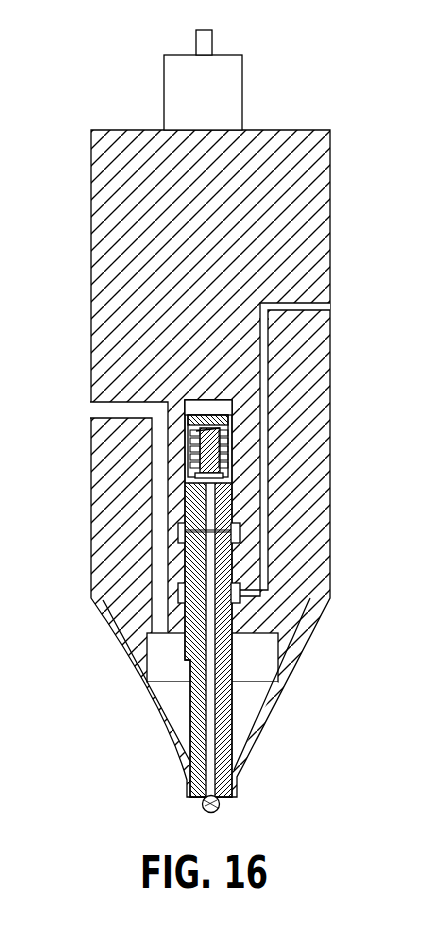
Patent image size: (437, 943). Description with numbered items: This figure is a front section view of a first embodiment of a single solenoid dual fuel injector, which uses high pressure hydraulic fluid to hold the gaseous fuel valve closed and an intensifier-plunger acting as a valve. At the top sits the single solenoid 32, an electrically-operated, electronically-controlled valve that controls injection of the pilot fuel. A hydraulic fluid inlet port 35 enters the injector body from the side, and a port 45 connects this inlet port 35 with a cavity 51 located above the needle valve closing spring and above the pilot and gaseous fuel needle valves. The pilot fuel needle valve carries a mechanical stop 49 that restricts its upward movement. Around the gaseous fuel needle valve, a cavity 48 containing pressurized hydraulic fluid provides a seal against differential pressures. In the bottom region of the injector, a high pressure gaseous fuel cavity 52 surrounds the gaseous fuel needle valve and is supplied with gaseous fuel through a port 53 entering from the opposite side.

The solenoid 32 is at (237, 92).
The hydraulic fluid inlet port 35 is at (330, 303).
The port 45 is at (272, 490).
The cavity 48 is at (183, 597).
The mechanical stop 49 is at (217, 448).
The cavity 51 is at (223, 408).
The high pressure gaseous fuel cavity 52 is at (263, 667).
The port 53 is at (100, 412).